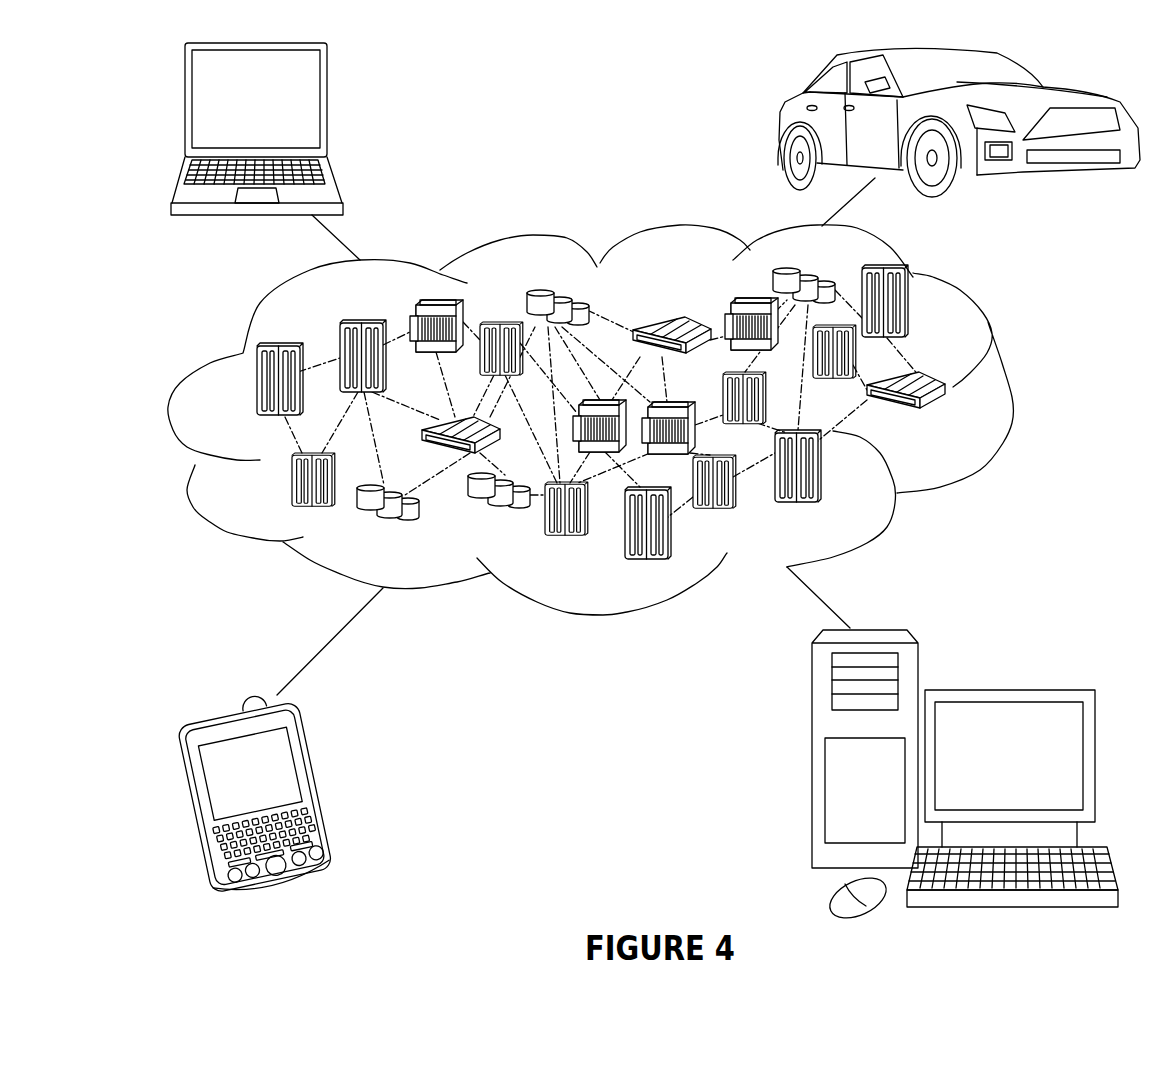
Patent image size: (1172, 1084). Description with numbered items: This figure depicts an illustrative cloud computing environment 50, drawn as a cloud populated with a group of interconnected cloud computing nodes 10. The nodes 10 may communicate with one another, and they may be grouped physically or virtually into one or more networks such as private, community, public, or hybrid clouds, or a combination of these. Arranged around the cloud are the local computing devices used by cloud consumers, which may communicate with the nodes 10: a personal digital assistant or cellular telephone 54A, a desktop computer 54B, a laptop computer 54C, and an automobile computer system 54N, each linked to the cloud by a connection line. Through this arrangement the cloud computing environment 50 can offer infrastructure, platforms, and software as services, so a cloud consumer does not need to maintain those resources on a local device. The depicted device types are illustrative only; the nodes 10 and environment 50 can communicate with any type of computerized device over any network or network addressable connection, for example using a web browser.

The cloud computing node 10 is at (947, 420).
The cloud computing environment 50 is at (620, 420).
The personal digital assistant or cellular telephone 54A is at (317, 790).
The desktop computer 54B is at (1006, 690).
The laptop computer 54C is at (328, 108).
The automobile computer system 54N is at (780, 122).